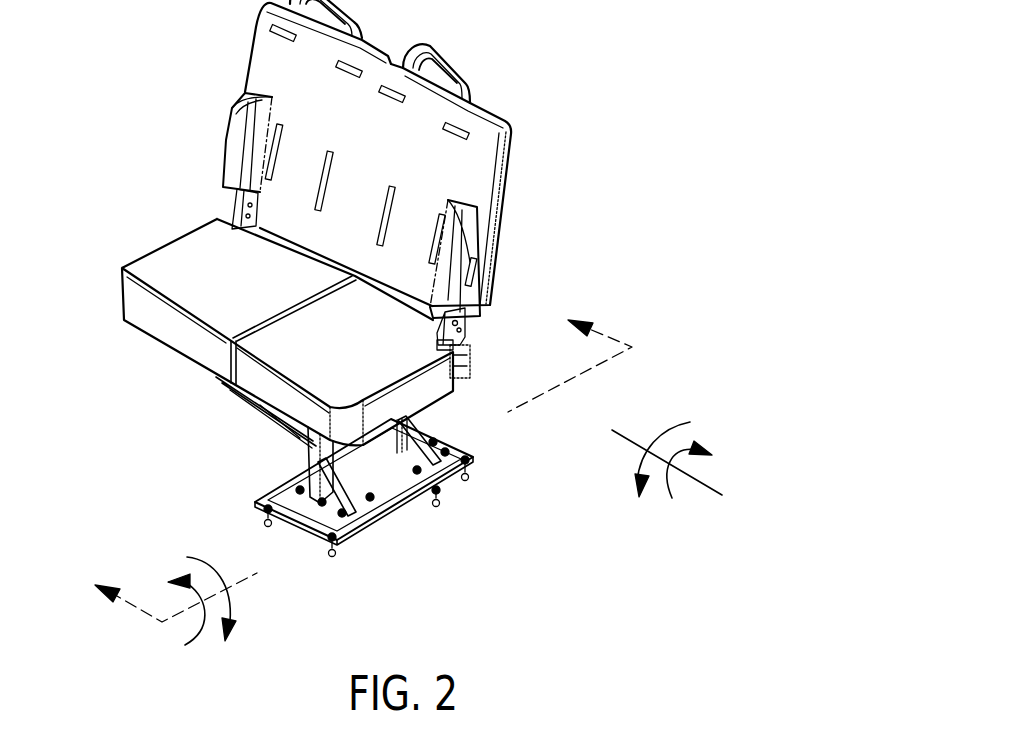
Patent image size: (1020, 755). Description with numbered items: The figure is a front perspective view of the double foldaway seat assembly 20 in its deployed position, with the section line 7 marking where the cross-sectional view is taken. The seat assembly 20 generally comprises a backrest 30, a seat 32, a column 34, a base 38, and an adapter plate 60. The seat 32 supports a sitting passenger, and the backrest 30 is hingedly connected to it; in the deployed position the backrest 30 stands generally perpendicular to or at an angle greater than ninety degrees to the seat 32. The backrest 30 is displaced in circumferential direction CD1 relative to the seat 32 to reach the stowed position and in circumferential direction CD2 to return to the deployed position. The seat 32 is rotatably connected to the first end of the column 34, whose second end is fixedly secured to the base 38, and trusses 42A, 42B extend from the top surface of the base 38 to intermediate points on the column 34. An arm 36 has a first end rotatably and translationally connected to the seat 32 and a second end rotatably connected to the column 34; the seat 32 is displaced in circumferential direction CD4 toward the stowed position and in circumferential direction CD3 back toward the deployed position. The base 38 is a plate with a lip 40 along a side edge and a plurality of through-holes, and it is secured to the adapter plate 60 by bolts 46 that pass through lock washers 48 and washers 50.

The seat assembly 20 is at (562, 130).
The backrest 30 is at (258, 44).
The seat 32 is at (165, 252).
The column 34 is at (388, 433).
The arm 36 is at (233, 390).
The base 38 is at (400, 483).
The lip 40 is at (287, 487).
The truss 42A is at (357, 520).
The truss 42B is at (435, 447).
The bolt 46 is at (263, 498).
The lock washer 48 is at (332, 545).
The washer 50 is at (436, 496).
The adapter plate 60 is at (296, 524).
The section line 7- 7 is at (358, 456).
The circumferential direction CD1 is at (675, 422).
The circumferential direction CD2 is at (672, 498).
The circumferential direction CD3 is at (186, 644).
The circumferential direction CD4 is at (232, 596).